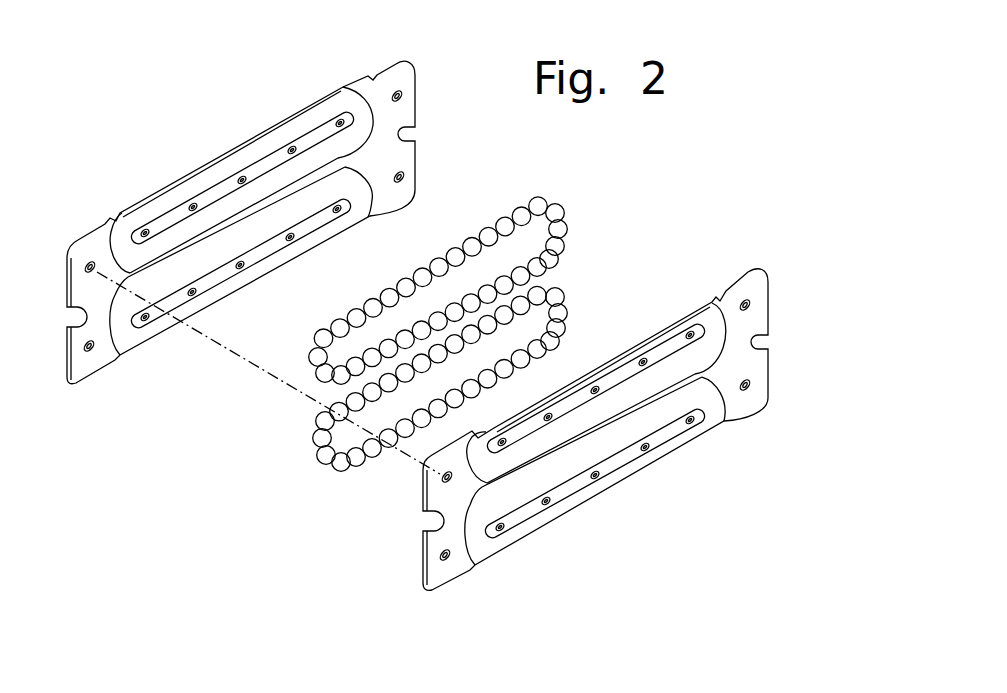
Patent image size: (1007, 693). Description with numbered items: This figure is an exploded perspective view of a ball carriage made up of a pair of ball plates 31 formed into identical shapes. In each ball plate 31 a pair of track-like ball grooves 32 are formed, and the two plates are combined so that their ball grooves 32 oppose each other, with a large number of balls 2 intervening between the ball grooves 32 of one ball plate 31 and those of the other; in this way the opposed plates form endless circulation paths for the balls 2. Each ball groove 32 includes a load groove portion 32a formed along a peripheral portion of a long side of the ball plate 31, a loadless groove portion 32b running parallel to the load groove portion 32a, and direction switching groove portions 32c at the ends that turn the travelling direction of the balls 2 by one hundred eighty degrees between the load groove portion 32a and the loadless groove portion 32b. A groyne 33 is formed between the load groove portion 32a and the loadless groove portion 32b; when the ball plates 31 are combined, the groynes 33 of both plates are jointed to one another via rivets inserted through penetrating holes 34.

The balls 2 is at (548, 212).
The ball plate 31 is at (100, 392).
The ball groove 32 is at (405, 296).
The load groove portion 32a is at (210, 180).
The loadless groove portion 32b is at (273, 187).
The direction switching groove portion 32c is at (128, 232).
The groyne 33 is at (172, 210).
The penetrating hole 34 is at (343, 125).